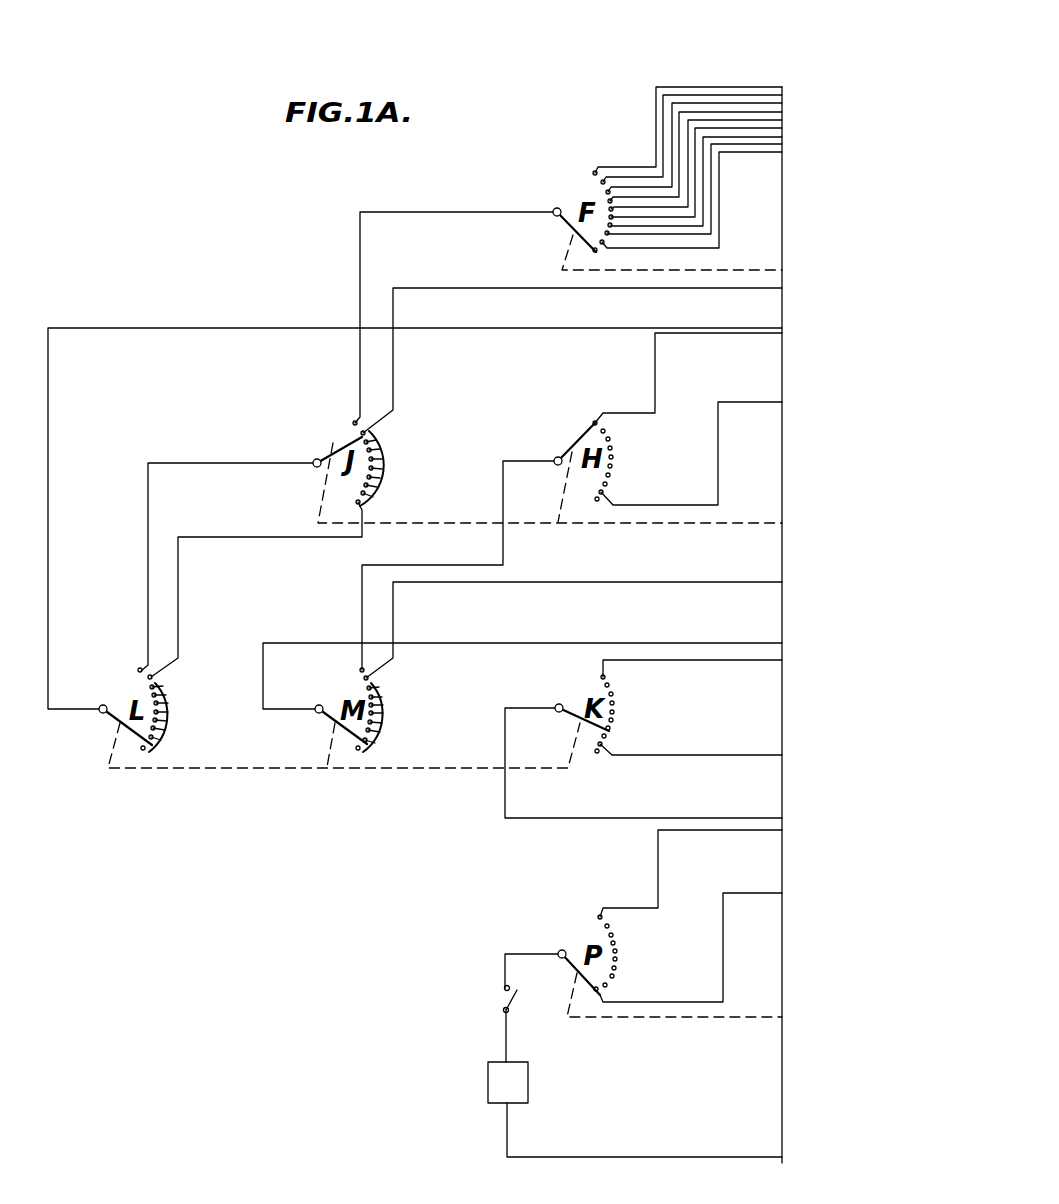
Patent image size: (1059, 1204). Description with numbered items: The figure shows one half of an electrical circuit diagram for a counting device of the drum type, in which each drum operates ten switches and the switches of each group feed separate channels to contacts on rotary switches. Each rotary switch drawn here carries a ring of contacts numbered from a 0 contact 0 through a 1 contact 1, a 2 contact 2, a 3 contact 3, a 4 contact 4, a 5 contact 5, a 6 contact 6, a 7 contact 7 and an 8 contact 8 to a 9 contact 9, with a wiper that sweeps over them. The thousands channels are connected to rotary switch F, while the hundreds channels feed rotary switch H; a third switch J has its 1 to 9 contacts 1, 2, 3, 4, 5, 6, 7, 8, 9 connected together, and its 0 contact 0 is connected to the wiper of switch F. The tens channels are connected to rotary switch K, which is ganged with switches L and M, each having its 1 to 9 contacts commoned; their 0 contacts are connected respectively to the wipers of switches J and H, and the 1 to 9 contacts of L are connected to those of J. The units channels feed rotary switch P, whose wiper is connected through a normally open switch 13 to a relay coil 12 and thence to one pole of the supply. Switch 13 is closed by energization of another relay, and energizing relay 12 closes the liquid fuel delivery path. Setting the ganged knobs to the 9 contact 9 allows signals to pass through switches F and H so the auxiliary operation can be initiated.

The 0 contact 0 is at (595, 172).
The 1 contact 1 is at (603, 180).
The 2 contact 2 is at (608, 190).
The 3 contact 3 is at (610, 199).
The 4 contact 4 is at (611, 207).
The 5 contact 5 is at (611, 218).
The 6 contact 6 is at (610, 226).
The 7 contact 7 is at (607, 234).
The 8 contact 8 is at (603, 244).
The 9 contact 9 is at (595, 252).
The relay coil 12 is at (528, 1083).
The normally open switch 13 is at (504, 996).